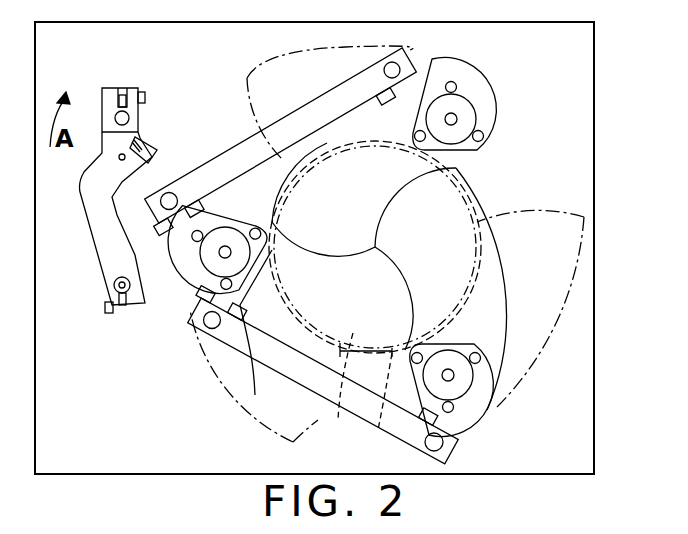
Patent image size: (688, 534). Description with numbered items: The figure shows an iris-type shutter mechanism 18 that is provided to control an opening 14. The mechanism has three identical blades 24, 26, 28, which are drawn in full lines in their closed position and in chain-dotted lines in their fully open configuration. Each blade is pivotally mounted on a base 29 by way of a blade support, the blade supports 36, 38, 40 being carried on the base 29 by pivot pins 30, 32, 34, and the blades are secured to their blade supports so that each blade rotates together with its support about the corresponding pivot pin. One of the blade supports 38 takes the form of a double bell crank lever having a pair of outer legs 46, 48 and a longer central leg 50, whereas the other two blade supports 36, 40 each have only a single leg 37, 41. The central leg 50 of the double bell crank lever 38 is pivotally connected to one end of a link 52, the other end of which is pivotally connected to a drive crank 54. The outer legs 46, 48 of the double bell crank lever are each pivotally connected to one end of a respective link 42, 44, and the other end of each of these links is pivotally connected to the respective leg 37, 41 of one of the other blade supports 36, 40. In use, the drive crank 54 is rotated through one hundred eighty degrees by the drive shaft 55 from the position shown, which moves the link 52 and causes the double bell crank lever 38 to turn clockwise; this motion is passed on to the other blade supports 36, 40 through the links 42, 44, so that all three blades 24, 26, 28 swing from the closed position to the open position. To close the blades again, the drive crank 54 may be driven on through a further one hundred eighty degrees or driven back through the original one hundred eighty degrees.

The opening 14 is at (367, 402).
The iris-type shutter mechanism 18 is at (544, 178).
The blade 24 is at (500, 300).
The blade 26 is at (335, 390).
The blade 28 is at (404, 173).
The base 29 is at (567, 107).
The pivot pin 30 is at (450, 377).
The pivot pin 32 is at (170, 287).
The pivot pin 34 is at (454, 117).
The blade support 36 is at (486, 390).
The leg 37 is at (458, 440).
The blade support 38 is at (193, 310).
The blade support 40 is at (471, 86).
The leg 41 is at (426, 47).
The link 42 is at (344, 376).
The link 44 is at (290, 129).
The outer leg 46 is at (247, 345).
The outer leg 48 is at (205, 210).
The central leg 50 is at (145, 305).
The link 52 is at (128, 197).
The drive crank 54 is at (138, 112).
The drive shaft 55 is at (113, 95).